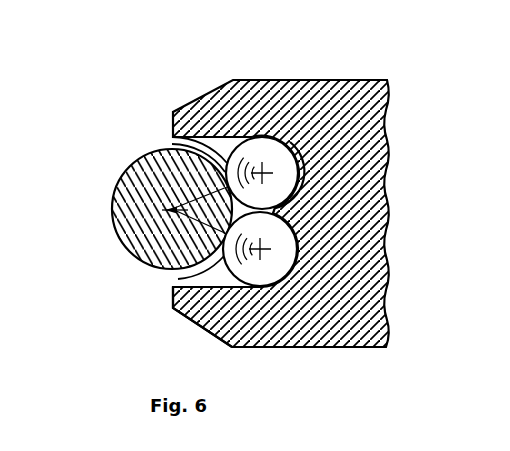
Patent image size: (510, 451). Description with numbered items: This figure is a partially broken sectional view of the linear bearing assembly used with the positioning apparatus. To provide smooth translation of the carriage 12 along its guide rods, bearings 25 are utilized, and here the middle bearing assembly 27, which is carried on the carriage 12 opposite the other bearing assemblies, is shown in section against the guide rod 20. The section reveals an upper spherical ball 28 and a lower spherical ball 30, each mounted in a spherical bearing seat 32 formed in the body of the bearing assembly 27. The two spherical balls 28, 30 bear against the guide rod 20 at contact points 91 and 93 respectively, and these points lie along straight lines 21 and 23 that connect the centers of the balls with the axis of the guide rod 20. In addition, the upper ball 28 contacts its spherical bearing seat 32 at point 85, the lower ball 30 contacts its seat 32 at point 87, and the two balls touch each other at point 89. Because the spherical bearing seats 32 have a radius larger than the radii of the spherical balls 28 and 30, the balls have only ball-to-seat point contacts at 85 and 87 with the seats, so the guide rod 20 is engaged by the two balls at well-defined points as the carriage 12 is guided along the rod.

The carriage 12 is at (367, 360).
The guide rod 20 is at (146, 212).
The straight line 21 is at (188, 177).
The straight line 23 is at (160, 254).
The bearings 25 is at (108, 315).
The middle bearing assembly 27 is at (357, 80).
The upper spherical ball 28 is at (178, 139).
The lower spherical ball 30 is at (188, 318).
The spherical bearing seats 32 is at (300, 205).
The ball-to-seat contact point 85 is at (294, 145).
The ball-to-seat contact point 87 is at (287, 286).
The ball-to-ball contact point 89 is at (296, 187).
The ball-to-rod contact point 91 is at (256, 148).
The ball-to-rod contact point 93 is at (171, 279).